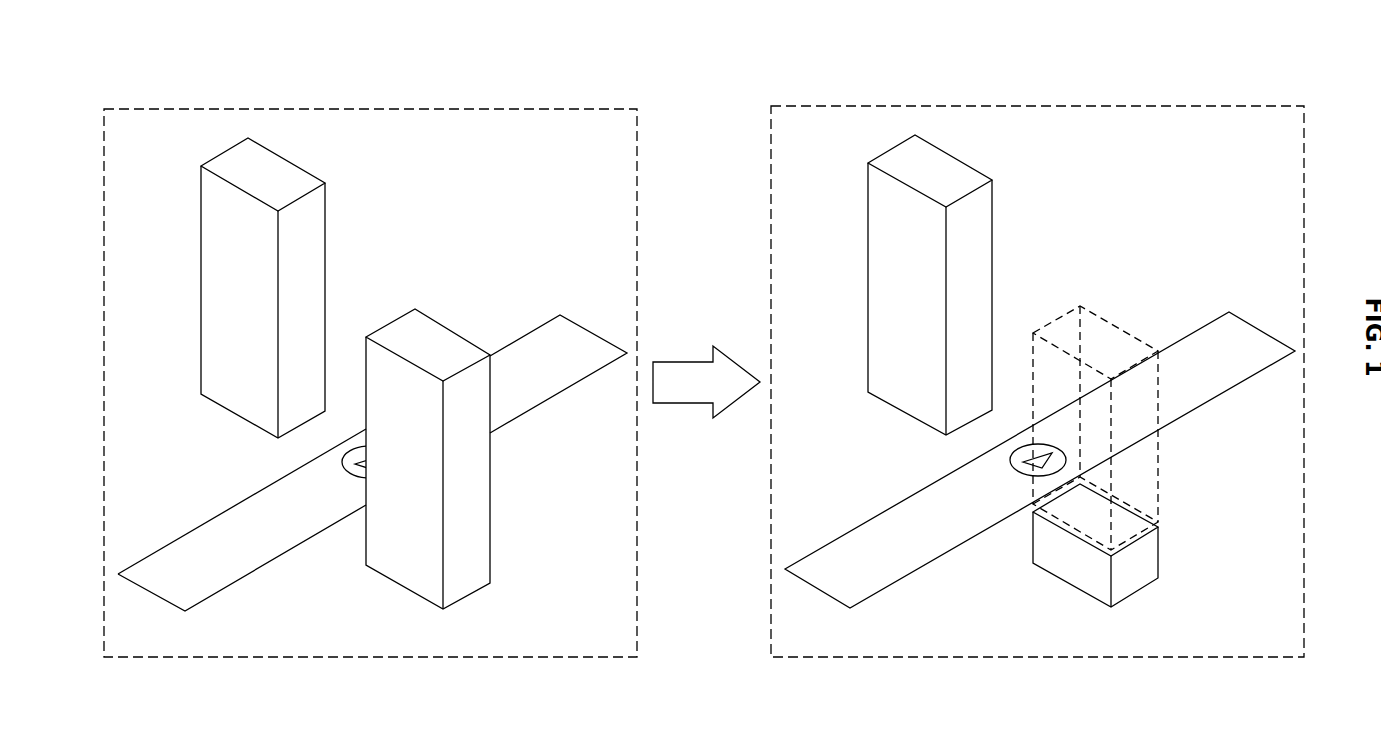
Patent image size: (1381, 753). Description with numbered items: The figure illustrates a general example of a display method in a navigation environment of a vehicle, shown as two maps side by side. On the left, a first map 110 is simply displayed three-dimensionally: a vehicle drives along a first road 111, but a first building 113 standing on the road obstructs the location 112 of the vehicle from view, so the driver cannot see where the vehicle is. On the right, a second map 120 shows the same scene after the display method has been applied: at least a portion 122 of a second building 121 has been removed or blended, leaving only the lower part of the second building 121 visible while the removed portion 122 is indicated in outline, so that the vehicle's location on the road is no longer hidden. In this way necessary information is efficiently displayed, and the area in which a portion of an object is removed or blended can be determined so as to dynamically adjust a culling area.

The first map 110 is at (370, 107).
The first road 111 is at (540, 326).
The location of a vehicle 112 is at (355, 478).
The first building 113 is at (492, 532).
The second map 120 is at (1036, 106).
The second building 121 is at (1158, 553).
The portion of a second building 122 is at (1158, 462).